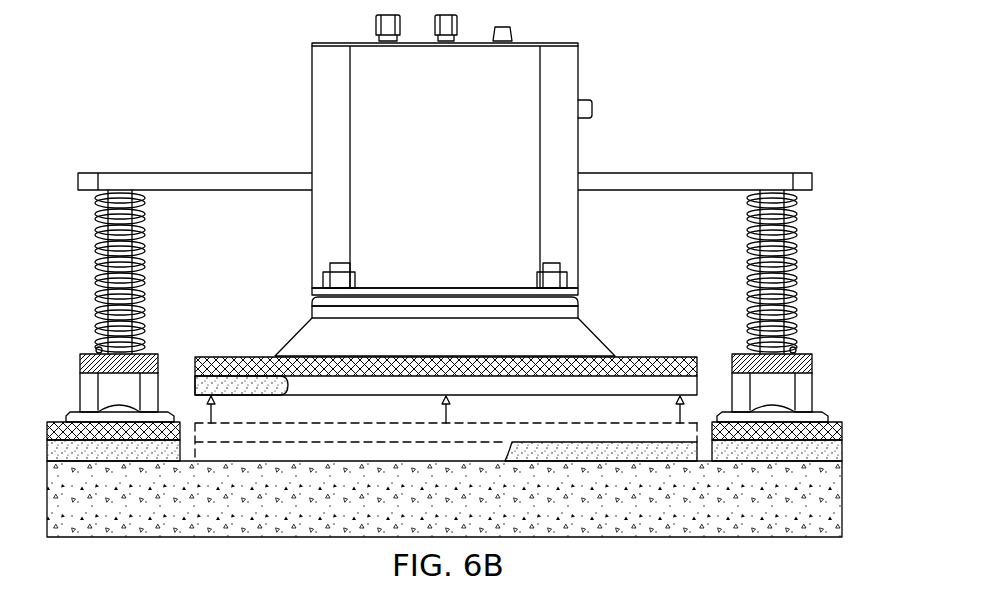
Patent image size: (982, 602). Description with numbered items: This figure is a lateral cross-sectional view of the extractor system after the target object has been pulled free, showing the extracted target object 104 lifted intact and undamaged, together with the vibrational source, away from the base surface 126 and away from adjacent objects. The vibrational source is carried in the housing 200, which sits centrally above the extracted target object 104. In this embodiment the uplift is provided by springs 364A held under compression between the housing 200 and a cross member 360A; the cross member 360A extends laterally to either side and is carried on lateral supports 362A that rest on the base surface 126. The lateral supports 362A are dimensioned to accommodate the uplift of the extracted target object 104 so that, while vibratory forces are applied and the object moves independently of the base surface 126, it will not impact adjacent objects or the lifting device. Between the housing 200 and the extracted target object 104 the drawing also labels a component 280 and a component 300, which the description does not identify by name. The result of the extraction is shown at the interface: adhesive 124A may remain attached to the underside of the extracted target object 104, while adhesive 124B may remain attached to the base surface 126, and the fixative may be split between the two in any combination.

The housing 200 is at (231, 173).
The housing 280 is at (463, 194).
The base pedestal 300 is at (463, 349).
The extracted target object 104 is at (230, 357).
The adhesive remaining on target object 124A is at (244, 384).
The adhesive remaining on base surface 124B is at (572, 456).
The base surface 126 is at (462, 509).
The springs 364A is at (797, 267).
The cross member 360A is at (812, 362).
The lateral supports 362A is at (812, 393).